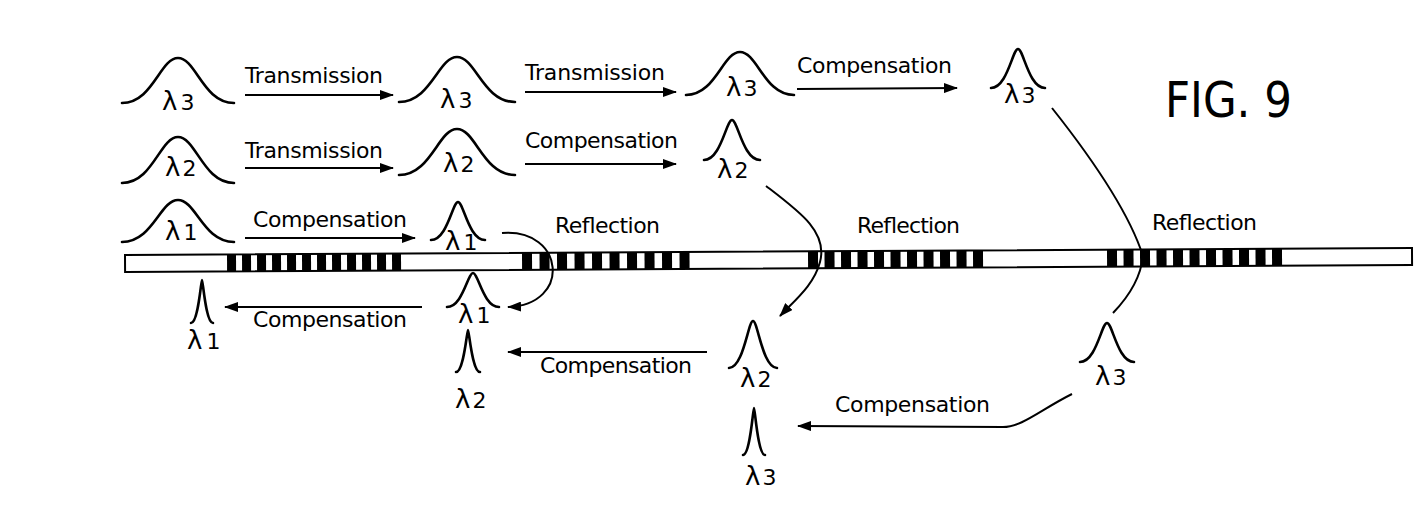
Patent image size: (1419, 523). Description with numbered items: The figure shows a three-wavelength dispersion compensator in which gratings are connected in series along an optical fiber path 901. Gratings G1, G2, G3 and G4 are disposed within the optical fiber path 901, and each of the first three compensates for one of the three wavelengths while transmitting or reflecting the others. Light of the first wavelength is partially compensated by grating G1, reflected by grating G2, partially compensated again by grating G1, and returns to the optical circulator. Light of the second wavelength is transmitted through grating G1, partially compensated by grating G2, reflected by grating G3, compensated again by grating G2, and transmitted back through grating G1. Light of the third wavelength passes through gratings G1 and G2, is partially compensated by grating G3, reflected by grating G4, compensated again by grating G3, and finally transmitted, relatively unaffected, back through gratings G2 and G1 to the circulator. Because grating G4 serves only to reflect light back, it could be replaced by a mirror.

The optical fiber path 901 is at (1347, 247).
The grating G1 is at (314, 279).
The grating G2 is at (606, 277).
The grating G3 is at (895, 274).
The grating G4 is at (1194, 273).